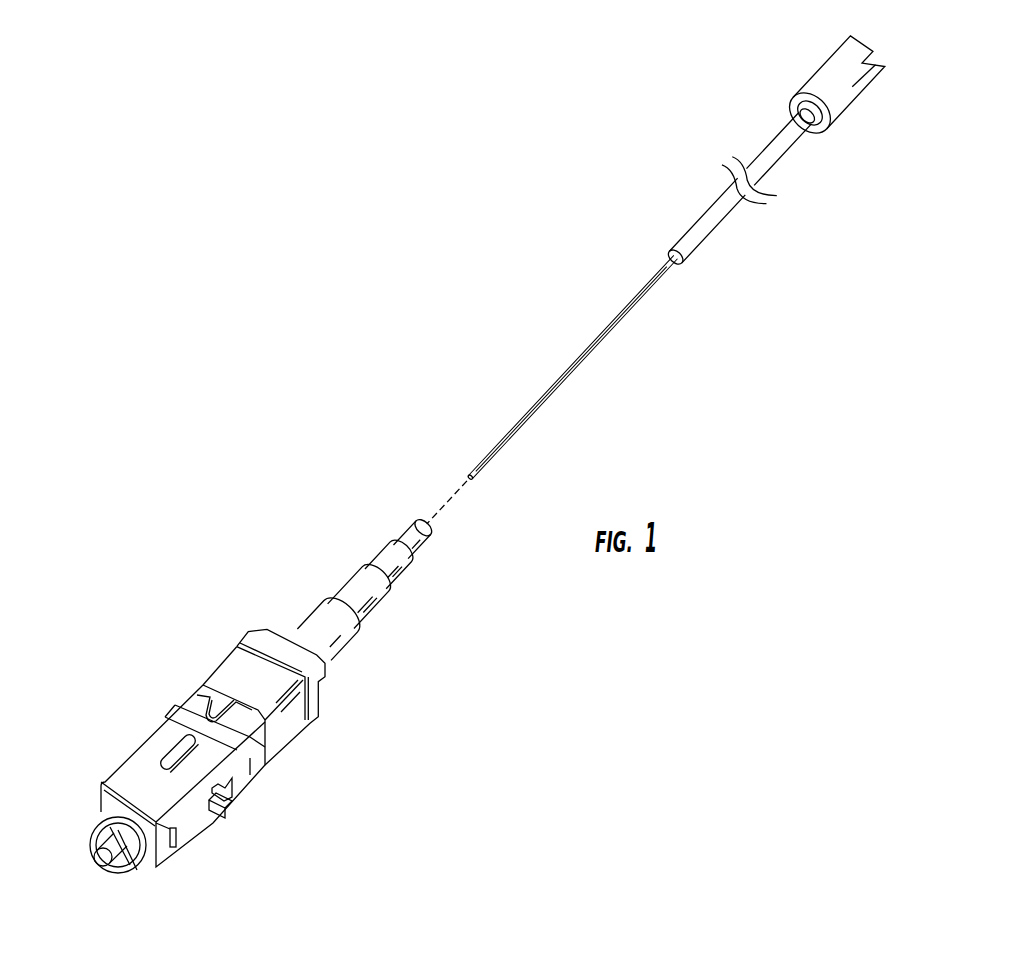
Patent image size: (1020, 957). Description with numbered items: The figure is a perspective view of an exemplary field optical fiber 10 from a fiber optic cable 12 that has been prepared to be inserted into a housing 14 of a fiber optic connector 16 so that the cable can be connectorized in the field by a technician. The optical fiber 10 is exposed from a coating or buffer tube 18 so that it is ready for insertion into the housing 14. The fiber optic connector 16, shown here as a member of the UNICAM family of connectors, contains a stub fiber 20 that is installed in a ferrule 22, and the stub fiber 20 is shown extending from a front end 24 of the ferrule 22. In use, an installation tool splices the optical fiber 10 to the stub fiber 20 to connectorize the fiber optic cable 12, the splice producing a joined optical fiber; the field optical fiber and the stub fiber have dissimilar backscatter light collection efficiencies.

The optical fiber 10 is at (633, 310).
The fiber optic cable 12 is at (820, 72).
The housing 14 is at (290, 728).
The fiber optic connector 16 is at (187, 637).
The buffer tube 18 is at (700, 244).
The stub fiber 20 is at (102, 860).
The ferrule 22 is at (137, 870).
The front end 24 is at (81, 840).